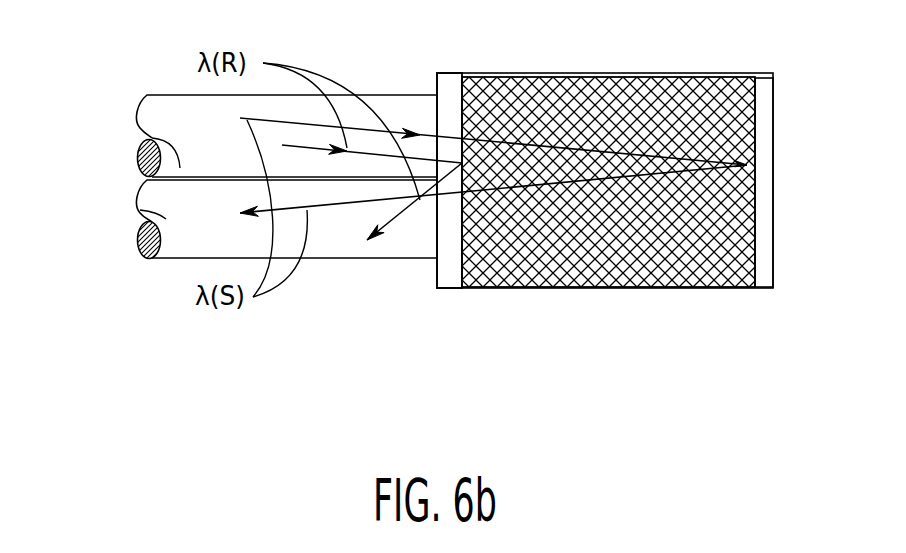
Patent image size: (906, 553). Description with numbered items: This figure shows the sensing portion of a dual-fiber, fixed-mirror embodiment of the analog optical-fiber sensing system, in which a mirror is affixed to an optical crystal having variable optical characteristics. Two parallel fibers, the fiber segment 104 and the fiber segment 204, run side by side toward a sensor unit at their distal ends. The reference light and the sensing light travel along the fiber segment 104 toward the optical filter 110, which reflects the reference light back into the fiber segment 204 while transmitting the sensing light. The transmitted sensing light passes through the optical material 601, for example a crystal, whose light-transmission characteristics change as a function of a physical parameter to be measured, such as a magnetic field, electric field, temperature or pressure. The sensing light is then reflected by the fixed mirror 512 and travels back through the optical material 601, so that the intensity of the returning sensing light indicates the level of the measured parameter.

The fiber segment 104 is at (145, 137).
The fiber segment 204 is at (140, 211).
The optical filter 110 is at (464, 73).
The optical material 601 is at (575, 77).
The fixed mirror 512 is at (763, 281).